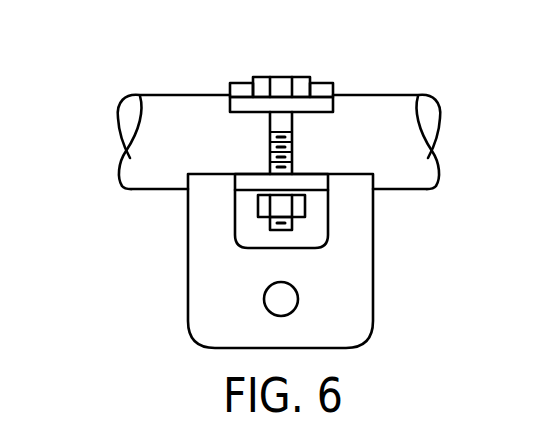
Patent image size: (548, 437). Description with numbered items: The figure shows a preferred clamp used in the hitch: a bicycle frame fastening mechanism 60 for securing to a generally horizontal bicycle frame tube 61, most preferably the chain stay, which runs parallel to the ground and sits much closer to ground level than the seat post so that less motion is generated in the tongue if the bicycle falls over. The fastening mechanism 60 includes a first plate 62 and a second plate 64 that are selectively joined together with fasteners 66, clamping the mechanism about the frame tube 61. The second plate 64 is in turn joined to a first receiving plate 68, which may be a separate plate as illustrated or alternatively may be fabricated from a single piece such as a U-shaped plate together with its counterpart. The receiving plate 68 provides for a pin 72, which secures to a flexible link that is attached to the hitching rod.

The bicycle frame fastening mechanism 60 is at (138, 38).
The bicycle frame tube 61 is at (131, 158).
The first plate 62 is at (328, 90).
The second plate 64 is at (315, 185).
The fasteners 66 is at (287, 86).
The first receiving plate 68 is at (202, 298).
The pin 72 is at (298, 299).